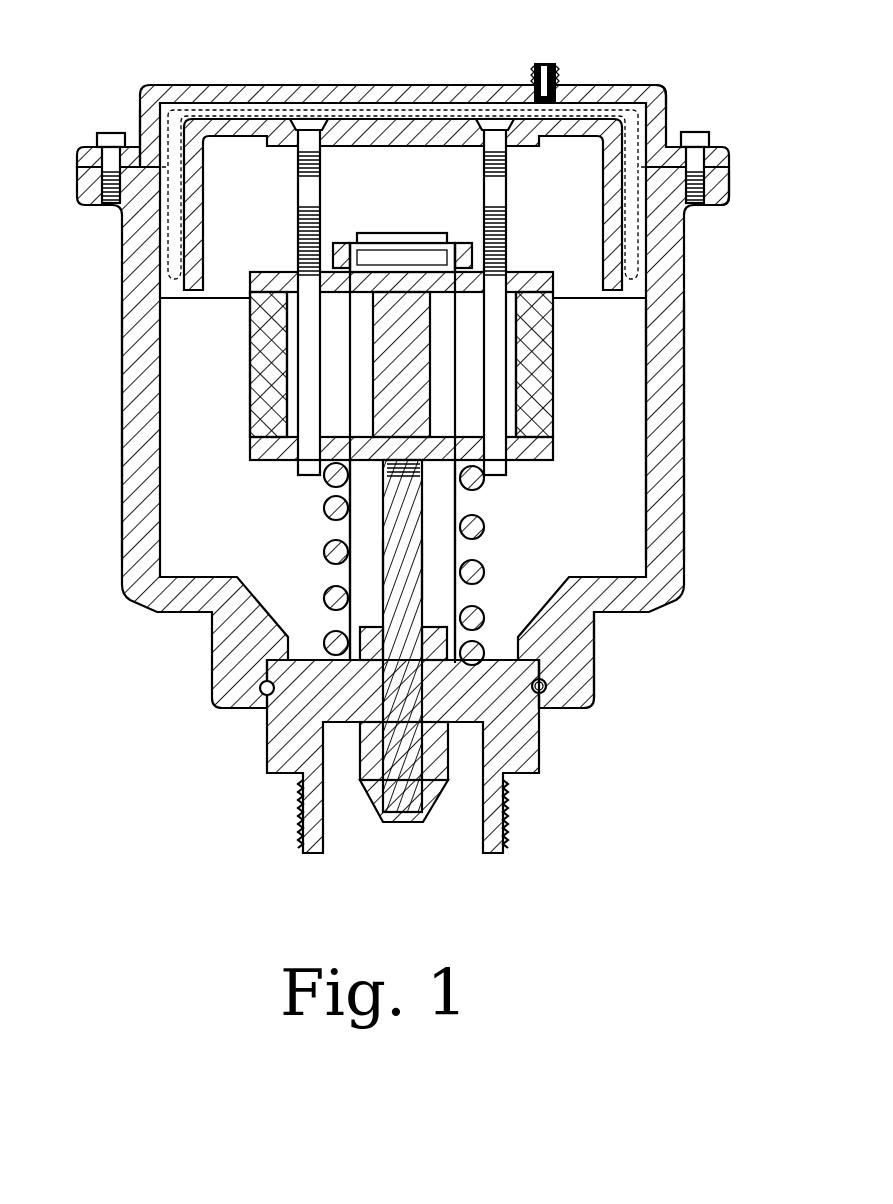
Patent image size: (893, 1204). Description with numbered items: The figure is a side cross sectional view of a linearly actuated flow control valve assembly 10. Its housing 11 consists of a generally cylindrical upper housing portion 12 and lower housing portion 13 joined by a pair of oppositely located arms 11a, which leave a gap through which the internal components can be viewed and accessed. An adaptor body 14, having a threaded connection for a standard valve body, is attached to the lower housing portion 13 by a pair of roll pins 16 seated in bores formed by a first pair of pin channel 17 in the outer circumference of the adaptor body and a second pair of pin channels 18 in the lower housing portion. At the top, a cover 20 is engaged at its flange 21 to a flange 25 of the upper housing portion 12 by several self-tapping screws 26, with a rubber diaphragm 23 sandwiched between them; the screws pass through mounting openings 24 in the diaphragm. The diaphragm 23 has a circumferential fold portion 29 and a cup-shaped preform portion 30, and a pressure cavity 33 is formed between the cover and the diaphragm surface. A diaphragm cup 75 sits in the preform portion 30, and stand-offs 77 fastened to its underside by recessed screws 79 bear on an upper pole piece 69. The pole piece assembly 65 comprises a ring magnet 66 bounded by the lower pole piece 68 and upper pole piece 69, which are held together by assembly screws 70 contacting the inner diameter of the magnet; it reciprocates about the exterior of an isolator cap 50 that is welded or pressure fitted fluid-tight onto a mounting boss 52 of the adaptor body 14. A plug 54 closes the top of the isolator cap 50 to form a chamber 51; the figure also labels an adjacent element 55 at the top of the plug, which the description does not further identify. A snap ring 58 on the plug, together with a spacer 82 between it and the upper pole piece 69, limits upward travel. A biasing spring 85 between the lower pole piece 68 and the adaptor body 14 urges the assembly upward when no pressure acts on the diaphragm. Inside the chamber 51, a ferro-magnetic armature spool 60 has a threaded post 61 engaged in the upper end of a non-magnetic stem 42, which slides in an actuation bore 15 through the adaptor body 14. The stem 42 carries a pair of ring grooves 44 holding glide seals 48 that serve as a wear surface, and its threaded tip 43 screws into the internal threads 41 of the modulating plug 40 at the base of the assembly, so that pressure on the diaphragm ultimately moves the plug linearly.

The flow control valve assembly 10 is at (578, 85).
The housing 11 is at (732, 298).
The arms 11a is at (683, 402).
The upper housing portion 12 is at (680, 330).
The lower housing portion 13 is at (640, 622).
The adaptor body 14 is at (508, 857).
The actuation bore 15 is at (267, 750).
The roll pins 16 is at (258, 690).
The pin channel 17 is at (538, 700).
The pin channels 18 is at (545, 692).
The cover 20 is at (362, 85).
The flange 21 is at (718, 143).
The diaphragm 23 is at (640, 88).
The mounting openings 24 is at (130, 155).
The flange 25 is at (708, 202).
The self-tapping screws 26 is at (93, 138).
The circumferential fold portion 29 is at (124, 288).
The preform portion 30 is at (130, 152).
The pressure cavity 33 is at (197, 110).
The modulating plug 40 is at (403, 832).
The internal threads 41 is at (372, 756).
The stem 42 is at (480, 552).
The threaded tip 43 is at (383, 805).
The ring grooves 44 is at (460, 598).
The glide seals 48 is at (360, 655).
The isolator cap 50 is at (457, 348).
The chamber 51 is at (363, 527).
The mounting boss 52 is at (333, 598).
The plug 54 is at (400, 250).
The top plate 55 is at (420, 243).
The snap ring 58 is at (345, 250).
The armature spool 60 is at (427, 423).
The threaded post 61 is at (420, 485).
The pole piece assembly 65 is at (250, 362).
The ring magnet 66 is at (255, 412).
The lower pole piece 68 is at (280, 458).
The upper pole piece 69 is at (272, 275).
The assembly screws 70 is at (273, 377).
The diaphragm cup 75 is at (240, 128).
The stand-offs 77 is at (300, 200).
The recessed screws 79 is at (300, 118).
The spacer 82 is at (262, 318).
The biasing spring 85 is at (445, 565).